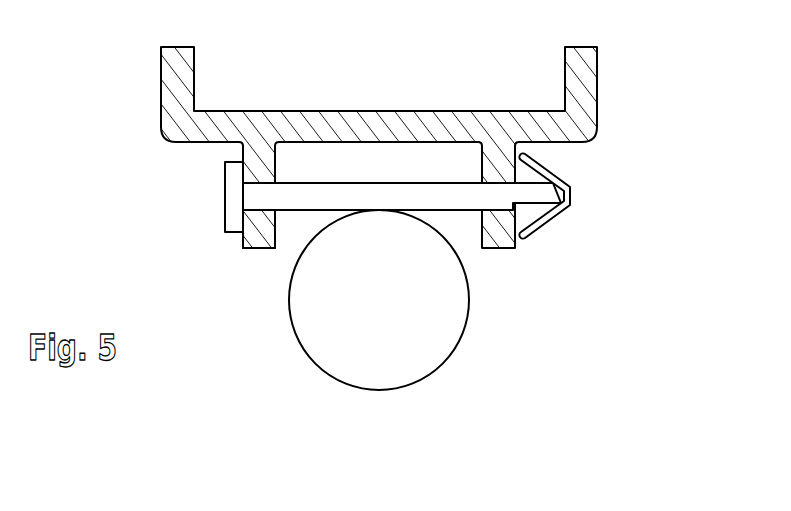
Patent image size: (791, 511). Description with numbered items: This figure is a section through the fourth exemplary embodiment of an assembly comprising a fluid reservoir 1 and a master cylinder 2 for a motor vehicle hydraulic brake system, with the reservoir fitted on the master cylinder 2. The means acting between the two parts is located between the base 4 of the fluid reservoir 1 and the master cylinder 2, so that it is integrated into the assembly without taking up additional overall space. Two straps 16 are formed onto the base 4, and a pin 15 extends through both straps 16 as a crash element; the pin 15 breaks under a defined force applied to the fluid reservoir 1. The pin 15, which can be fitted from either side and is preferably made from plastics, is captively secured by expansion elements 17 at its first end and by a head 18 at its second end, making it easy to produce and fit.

The fluid reservoir 1 is at (312, 111).
The master cylinder 2 is at (428, 342).
The base 4 is at (453, 130).
The pin 15 is at (302, 212).
The straps 16 is at (260, 238).
The expansion elements 17 is at (538, 167).
The head 18 is at (233, 199).